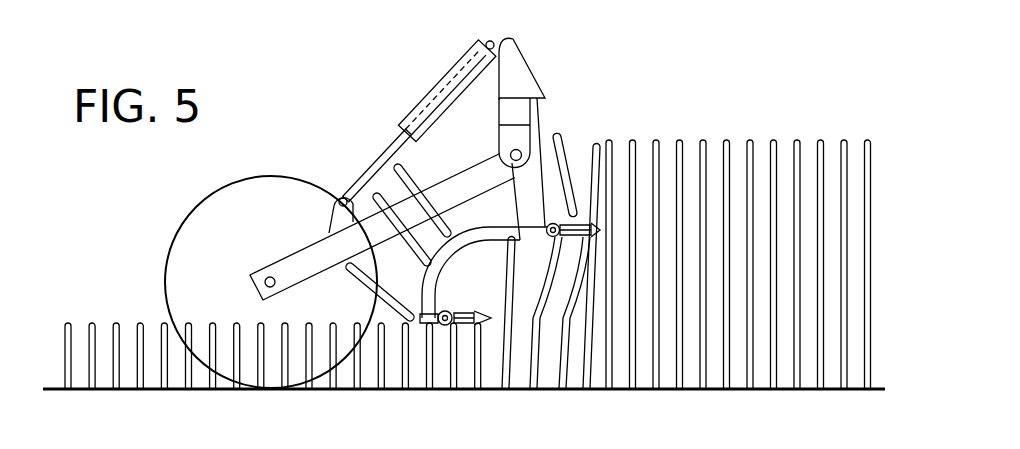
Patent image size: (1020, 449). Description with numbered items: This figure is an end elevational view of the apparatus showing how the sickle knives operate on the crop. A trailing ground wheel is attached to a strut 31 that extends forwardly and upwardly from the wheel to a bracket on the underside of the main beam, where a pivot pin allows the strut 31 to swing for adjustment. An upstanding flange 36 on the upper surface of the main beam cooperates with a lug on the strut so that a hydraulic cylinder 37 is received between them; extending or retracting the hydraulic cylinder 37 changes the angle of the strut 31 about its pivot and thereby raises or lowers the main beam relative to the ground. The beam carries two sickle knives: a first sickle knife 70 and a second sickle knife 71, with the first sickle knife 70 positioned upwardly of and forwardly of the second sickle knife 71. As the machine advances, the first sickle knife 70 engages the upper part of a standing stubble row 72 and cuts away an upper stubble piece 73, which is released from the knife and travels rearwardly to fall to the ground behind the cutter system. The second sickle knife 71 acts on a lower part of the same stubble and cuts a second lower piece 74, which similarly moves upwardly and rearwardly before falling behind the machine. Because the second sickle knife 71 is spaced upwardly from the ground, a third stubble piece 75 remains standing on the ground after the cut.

The strut 31 is at (318, 254).
The upstanding flange 36 is at (518, 70).
The hydraulic cylinder 37 is at (426, 88).
The first sickle knife 70 is at (582, 208).
The second sickle knife 71 is at (466, 300).
The standing stubble row 72 is at (879, 150).
The upper stubble piece 73 is at (562, 136).
The second lower piece 74 is at (364, 285).
The third stubble piece 75 is at (56, 330).